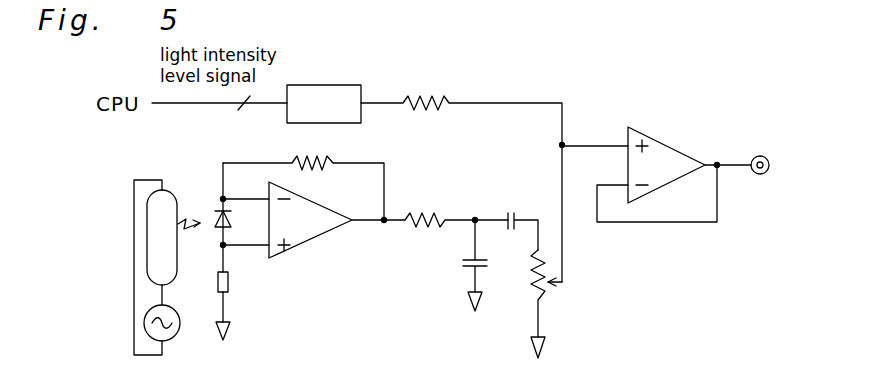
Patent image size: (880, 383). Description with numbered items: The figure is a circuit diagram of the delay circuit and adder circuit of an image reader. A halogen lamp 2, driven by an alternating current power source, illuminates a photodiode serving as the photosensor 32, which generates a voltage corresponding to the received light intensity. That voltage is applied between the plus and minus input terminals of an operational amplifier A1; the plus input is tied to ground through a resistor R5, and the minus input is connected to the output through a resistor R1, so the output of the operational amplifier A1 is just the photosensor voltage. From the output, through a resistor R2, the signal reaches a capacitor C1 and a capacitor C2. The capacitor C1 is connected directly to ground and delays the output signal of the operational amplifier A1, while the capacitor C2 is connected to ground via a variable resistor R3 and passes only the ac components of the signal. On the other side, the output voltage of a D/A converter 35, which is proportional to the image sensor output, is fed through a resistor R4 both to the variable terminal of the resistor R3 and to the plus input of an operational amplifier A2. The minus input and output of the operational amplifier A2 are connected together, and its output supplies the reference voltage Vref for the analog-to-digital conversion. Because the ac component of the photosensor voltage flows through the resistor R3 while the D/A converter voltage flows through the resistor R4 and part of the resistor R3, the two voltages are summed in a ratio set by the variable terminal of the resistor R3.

The halogen lamp 2 is at (168, 190).
The photosensor 32 is at (213, 225).
The D/A converter 35 is at (328, 85).
The resistor R1 is at (312, 160).
The resistor R2 is at (420, 212).
The variable resistor R3 is at (530, 285).
The resistor R4 is at (425, 95).
The resistor R5 is at (228, 285).
The capacitor C1 is at (458, 265).
The capacitor C2 is at (517, 218).
The operational amplifier A1 is at (318, 232).
The operational amplifier A2 is at (678, 140).